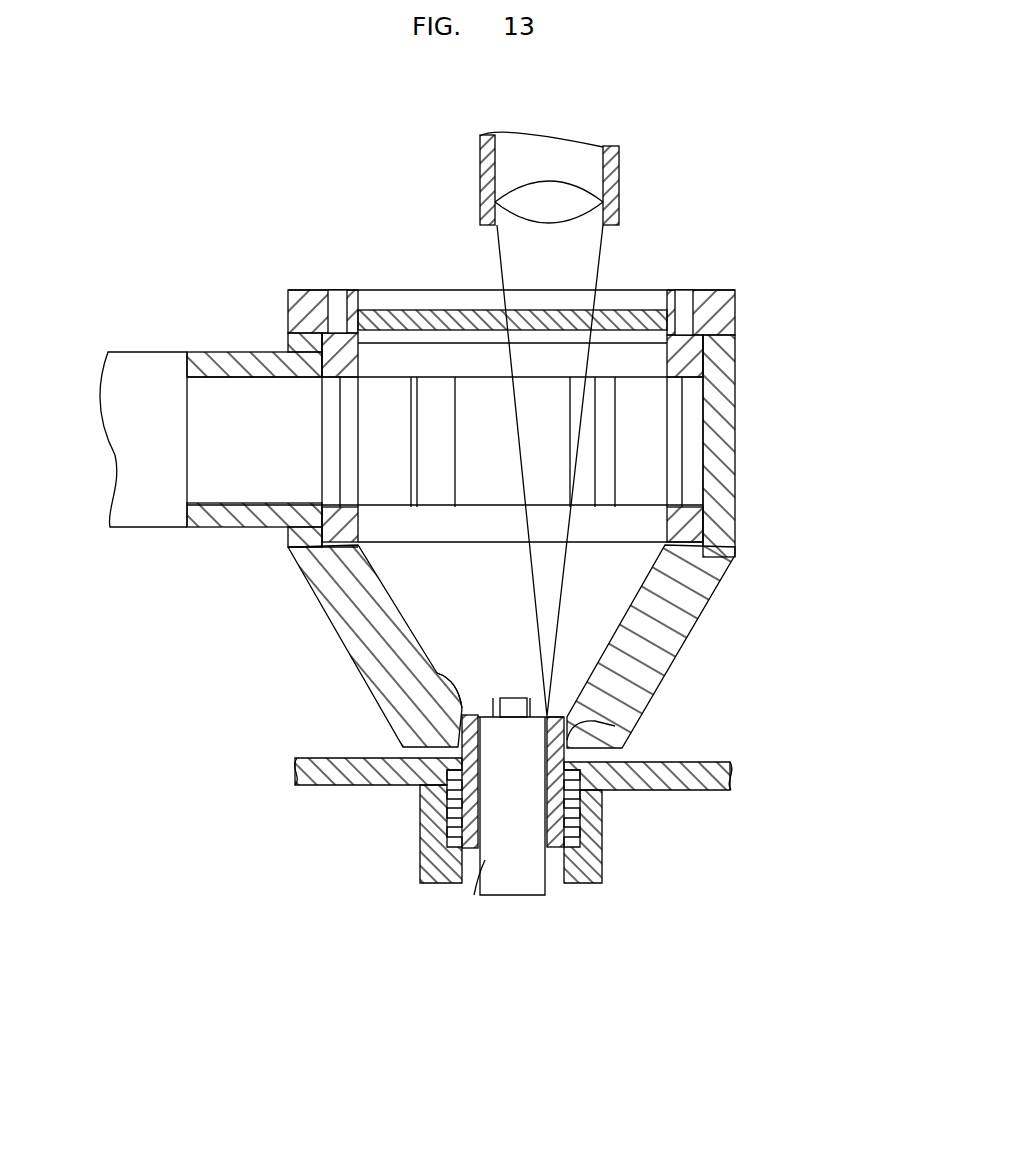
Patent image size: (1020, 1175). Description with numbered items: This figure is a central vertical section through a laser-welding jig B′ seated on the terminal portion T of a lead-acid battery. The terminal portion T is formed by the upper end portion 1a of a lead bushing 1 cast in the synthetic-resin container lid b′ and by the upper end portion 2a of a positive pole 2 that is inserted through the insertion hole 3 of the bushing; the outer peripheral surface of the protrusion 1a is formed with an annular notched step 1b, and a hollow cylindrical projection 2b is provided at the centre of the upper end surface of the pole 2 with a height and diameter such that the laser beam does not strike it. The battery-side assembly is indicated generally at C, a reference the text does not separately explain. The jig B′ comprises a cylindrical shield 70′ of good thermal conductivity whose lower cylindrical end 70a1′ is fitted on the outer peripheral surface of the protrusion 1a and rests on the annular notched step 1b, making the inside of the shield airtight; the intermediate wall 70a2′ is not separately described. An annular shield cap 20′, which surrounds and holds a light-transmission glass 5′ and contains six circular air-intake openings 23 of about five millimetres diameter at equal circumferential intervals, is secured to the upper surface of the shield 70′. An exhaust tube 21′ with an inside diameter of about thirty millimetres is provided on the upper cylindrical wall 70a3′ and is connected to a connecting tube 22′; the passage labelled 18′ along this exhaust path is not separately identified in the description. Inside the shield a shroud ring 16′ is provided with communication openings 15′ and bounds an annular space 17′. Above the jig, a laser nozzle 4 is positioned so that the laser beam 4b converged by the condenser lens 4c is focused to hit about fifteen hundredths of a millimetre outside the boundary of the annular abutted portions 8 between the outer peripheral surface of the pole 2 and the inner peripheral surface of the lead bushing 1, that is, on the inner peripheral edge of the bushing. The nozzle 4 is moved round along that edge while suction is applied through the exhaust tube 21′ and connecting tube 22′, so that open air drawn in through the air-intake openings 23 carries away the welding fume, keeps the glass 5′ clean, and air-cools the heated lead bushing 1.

The laser nozzle 4 is at (482, 151).
The condenser lens 4c is at (578, 192).
The laser beam 4b is at (583, 255).
The air-intake openings 23 is at (338, 292).
The annular shield cap 20′ is at (302, 290).
The light-transmission glass 5′ is at (392, 318).
The connecting tube 22′ is at (140, 362).
The connecting tube 18′ is at (213, 395).
The laser-welding jig B′ is at (780, 262).
The cylindrical shield 70′ is at (762, 353).
The communication opening 15′ is at (690, 408).
The annular space 17′ is at (693, 445).
The upper cylindrical wall 70a3′ is at (717, 483).
The shroud ring 16′ is at (688, 535).
The exhaust tube 21′ is at (195, 530).
The conical housing wall 70a2′ is at (678, 624).
The projection 2b is at (502, 698).
The upper end portion of the pole 2a is at (487, 714).
The terminal portion T is at (567, 684).
The annular abutted portions 8 is at (440, 670).
The connector unit C is at (738, 708).
The annular notched step 1b is at (618, 726).
The lower cylindrical end 70a1′ is at (405, 737).
The upper end portion of the lead bushing 1a is at (458, 732).
The lead bushing 1 is at (600, 821).
The container lid b′ is at (733, 752).
The pole 2 is at (500, 882).
The insertion hole 3 is at (485, 860).